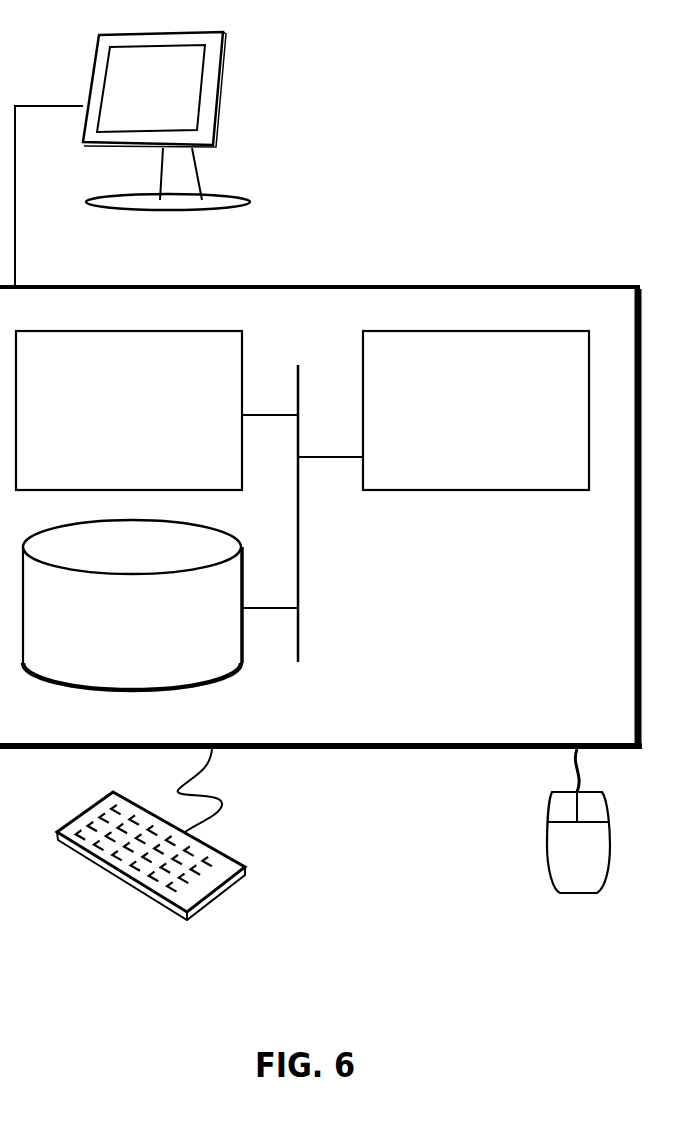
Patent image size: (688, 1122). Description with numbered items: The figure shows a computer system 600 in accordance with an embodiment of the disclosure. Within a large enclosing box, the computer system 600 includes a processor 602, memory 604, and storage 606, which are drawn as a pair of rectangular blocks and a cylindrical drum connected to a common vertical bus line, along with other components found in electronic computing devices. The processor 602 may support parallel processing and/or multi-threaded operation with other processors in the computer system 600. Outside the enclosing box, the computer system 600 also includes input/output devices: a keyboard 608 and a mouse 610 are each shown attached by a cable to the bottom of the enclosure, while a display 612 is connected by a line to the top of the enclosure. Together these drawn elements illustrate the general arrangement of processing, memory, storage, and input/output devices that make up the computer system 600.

The computer system 600 is at (353, 257).
The processor 602 is at (458, 422).
The memory 604 is at (108, 422).
The storage 606 is at (115, 633).
The keyboard 608 is at (73, 855).
The mouse 610 is at (555, 864).
The display 612 is at (132, 159).